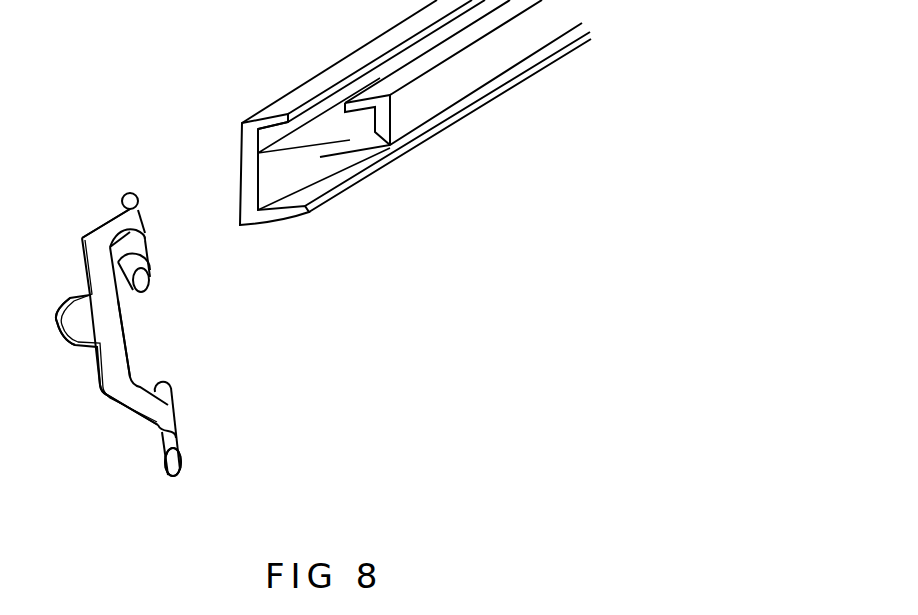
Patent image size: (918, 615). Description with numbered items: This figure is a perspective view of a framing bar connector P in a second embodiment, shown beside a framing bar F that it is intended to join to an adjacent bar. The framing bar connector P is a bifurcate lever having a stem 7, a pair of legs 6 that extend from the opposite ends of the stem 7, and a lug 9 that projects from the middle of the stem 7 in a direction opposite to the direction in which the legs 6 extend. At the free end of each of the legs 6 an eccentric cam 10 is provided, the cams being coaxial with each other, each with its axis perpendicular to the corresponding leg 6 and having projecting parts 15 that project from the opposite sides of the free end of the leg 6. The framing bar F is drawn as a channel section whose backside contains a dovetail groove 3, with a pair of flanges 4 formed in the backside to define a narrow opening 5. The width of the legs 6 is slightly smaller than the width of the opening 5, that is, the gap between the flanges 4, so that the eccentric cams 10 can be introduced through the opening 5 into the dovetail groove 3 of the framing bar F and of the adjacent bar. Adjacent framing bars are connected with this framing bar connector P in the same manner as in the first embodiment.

The framing bar F is at (277, 101).
The framing bar connector P is at (98, 374).
The dovetail groove 3 is at (353, 128).
The flanges 4 is at (357, 75).
The opening 5 is at (313, 133).
The legs 6 is at (108, 228).
The stem 7 is at (123, 337).
The lug 9 is at (70, 322).
The eccentric cams 10 is at (147, 247).
The projecting parts 15 is at (177, 478).